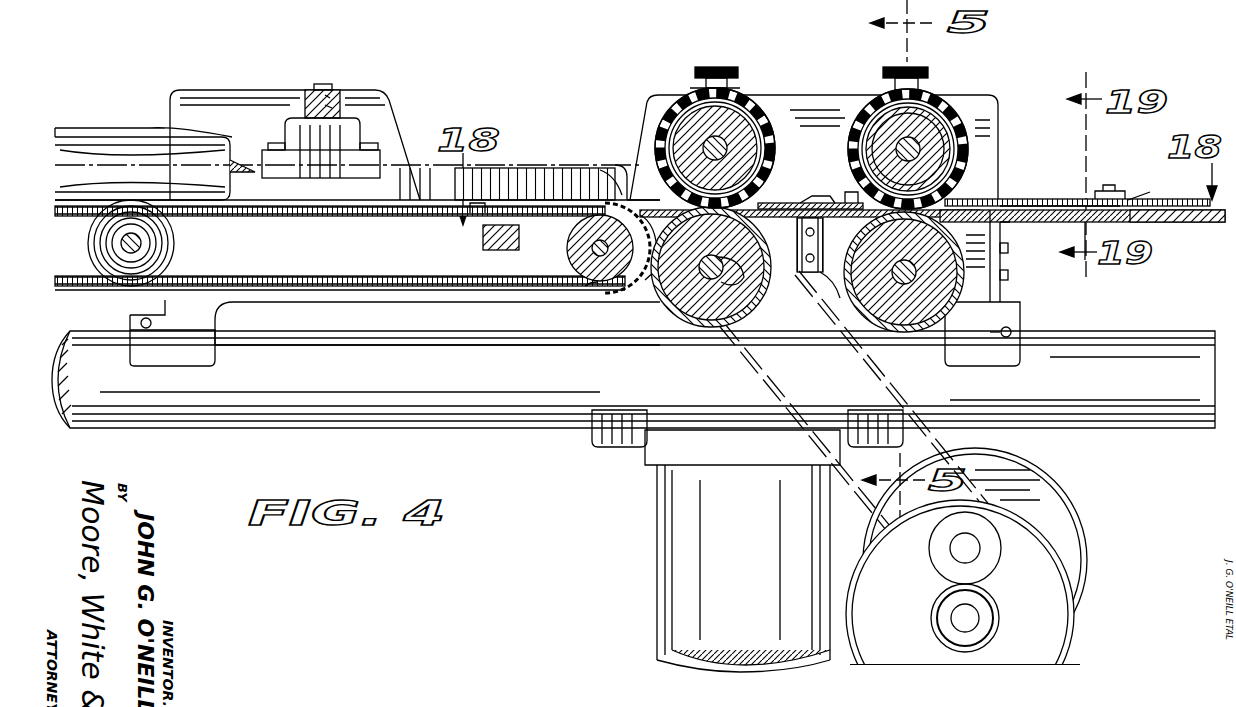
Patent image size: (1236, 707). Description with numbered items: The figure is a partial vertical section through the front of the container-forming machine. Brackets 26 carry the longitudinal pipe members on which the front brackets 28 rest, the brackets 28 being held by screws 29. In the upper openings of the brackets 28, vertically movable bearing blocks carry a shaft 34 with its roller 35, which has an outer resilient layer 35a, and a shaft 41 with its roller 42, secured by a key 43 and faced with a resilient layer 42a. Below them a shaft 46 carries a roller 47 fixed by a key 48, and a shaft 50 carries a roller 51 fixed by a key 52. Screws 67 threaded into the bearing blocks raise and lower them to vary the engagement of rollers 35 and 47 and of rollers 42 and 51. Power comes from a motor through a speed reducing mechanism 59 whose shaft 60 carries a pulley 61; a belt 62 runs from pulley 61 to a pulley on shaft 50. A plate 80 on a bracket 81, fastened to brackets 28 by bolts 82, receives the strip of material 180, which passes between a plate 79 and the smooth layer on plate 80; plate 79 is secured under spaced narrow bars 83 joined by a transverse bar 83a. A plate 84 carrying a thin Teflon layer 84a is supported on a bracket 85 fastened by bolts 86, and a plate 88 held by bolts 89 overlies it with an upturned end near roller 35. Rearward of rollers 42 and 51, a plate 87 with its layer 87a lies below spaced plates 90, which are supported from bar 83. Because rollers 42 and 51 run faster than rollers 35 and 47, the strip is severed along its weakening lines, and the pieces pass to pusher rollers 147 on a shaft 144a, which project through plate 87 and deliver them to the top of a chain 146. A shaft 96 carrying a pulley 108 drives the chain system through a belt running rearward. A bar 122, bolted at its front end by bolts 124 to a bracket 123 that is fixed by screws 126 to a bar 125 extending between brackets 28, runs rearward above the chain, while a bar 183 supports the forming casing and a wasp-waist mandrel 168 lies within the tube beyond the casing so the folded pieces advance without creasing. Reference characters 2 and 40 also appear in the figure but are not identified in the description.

The base rail 2 is at (1200, 372).
The bracket 26 is at (635, 448).
The bracket 28 is at (805, 112).
The screw 29 is at (135, 318).
The shaft 34 is at (950, 115).
The roller 35 is at (938, 108).
The outer layer of resilient material 35a is at (852, 125).
The roller shaft 40 is at (904, 135).
The shaft 41 is at (708, 135).
The roller 42 is at (738, 120).
The outer layer of resilient material 42a is at (755, 110).
The key 43 is at (672, 105).
The shaft 46 is at (1000, 290).
The roller 47 is at (1008, 257).
The key 48 is at (912, 268).
The shaft 50 is at (688, 322).
The roller 51 is at (668, 310).
The key 52 is at (748, 312).
The speed reducing mechanism 59 is at (1010, 495).
The shaft 60 is at (980, 552).
The pulley 61 is at (945, 578).
The belt 62 is at (920, 440).
The screw 67 is at (724, 68).
The plate 79 is at (1140, 195).
The plate 80 is at (1150, 222).
The bracket 81 is at (1115, 262).
The bolt 82 is at (1008, 276).
The bar 83 is at (1048, 200).
The transversely extending bar 83a is at (1112, 190).
The plate 84 is at (827, 245).
The layer of tetrafluoroethylene polymer 84a is at (770, 203).
The bracket 85 is at (838, 300).
The bolt 86 is at (838, 300).
The plate 87 is at (656, 245).
The layer of tetrafluoroethylene polymer 87a is at (652, 200).
The plate 88 is at (843, 194).
The bolt 89 is at (815, 196).
The plate 90 is at (610, 175).
The shaft 96 is at (142, 243).
The pulley 108 is at (90, 238).
The bar 122 is at (397, 165).
The bracket 123 is at (300, 115).
The bolt 124 is at (368, 148).
The bar 125 is at (328, 100).
The screw 126 is at (322, 84).
The shaft 144a is at (590, 285).
The chain 146 is at (335, 250).
The pusher roller 147 is at (575, 248).
The mandrel 168 is at (133, 150).
The strip of material 180 is at (1140, 222).
The bar 183 is at (483, 237).